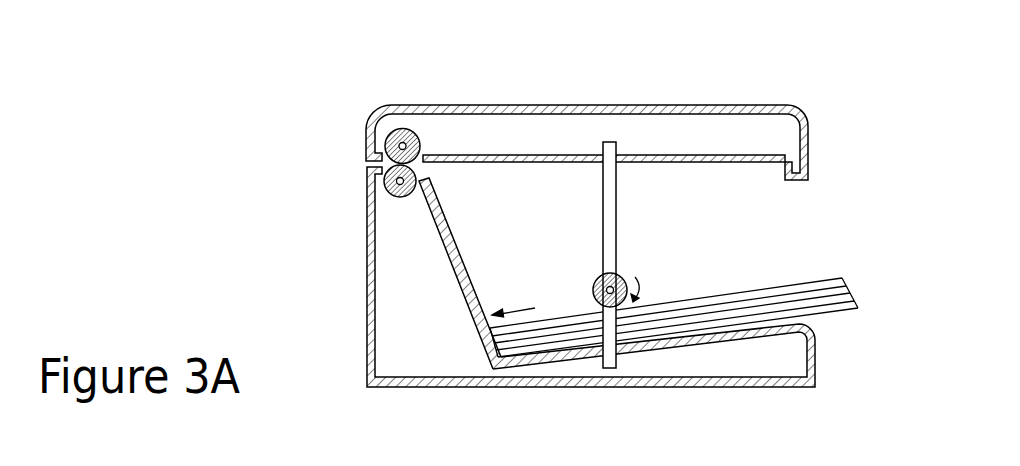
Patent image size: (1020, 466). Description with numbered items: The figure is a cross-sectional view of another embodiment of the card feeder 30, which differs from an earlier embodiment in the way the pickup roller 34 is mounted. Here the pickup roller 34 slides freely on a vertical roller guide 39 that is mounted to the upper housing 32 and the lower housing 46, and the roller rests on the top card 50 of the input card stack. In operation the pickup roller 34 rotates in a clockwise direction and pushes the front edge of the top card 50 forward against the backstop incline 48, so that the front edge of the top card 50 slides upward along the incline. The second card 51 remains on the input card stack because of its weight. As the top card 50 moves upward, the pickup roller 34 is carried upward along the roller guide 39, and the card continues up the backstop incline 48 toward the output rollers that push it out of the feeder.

The card feeder 30 is at (613, 198).
The upper housing 32 is at (513, 106).
The pickup roller 34 is at (593, 285).
The vertical roller guide 39 is at (617, 232).
The lower housing 46 is at (398, 308).
The backstop incline 48 is at (440, 250).
The top card 50 is at (838, 272).
The second card 51 is at (848, 289).